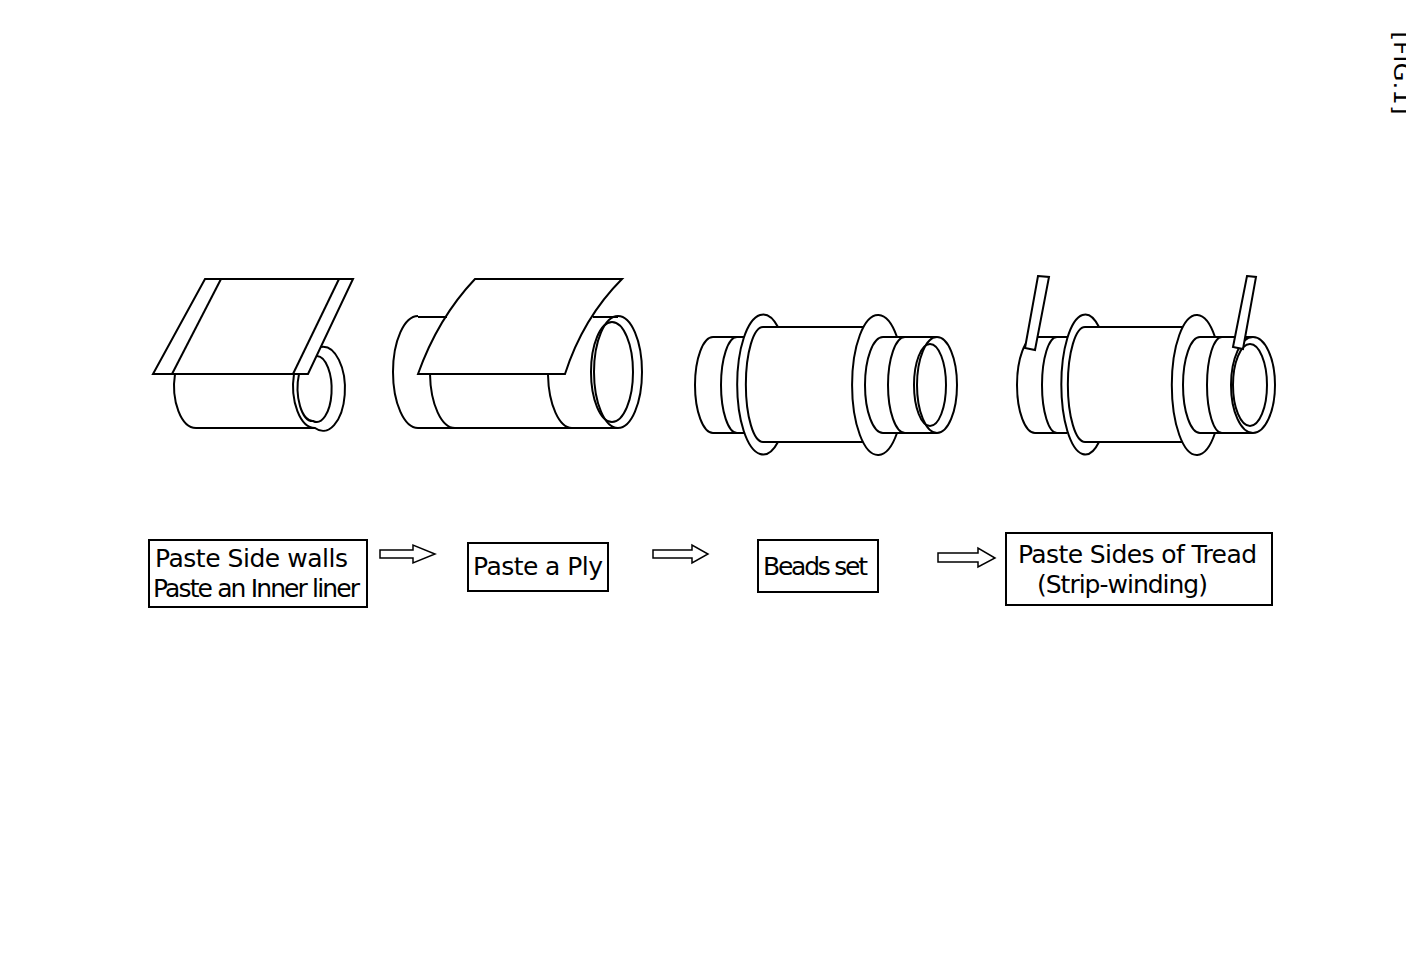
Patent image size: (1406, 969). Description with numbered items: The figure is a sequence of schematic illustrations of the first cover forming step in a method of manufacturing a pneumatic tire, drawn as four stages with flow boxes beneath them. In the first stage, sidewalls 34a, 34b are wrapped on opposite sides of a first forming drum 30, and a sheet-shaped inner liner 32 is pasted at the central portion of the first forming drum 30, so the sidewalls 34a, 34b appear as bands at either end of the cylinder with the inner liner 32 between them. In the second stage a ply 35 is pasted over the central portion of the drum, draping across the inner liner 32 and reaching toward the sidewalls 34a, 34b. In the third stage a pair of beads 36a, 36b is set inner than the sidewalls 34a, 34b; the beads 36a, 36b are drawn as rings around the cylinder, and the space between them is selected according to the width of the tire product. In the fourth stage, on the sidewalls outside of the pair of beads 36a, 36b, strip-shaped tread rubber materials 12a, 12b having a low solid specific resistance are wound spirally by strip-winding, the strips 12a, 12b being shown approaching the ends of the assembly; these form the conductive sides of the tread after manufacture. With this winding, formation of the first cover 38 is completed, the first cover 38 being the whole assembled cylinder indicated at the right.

The first forming drum 30 is at (195, 400).
The inner liner 32 is at (253, 292).
The sidewall 34a is at (343, 285).
The sidewall 34b is at (190, 315).
The ply 35 is at (558, 283).
The bead 36a is at (878, 318).
The bead 36b is at (765, 318).
The strip-shaped tread rubber material 12a is at (1252, 295).
The strip-shaped tread rubber material 12b is at (1037, 302).
The first cover 38 is at (1283, 360).